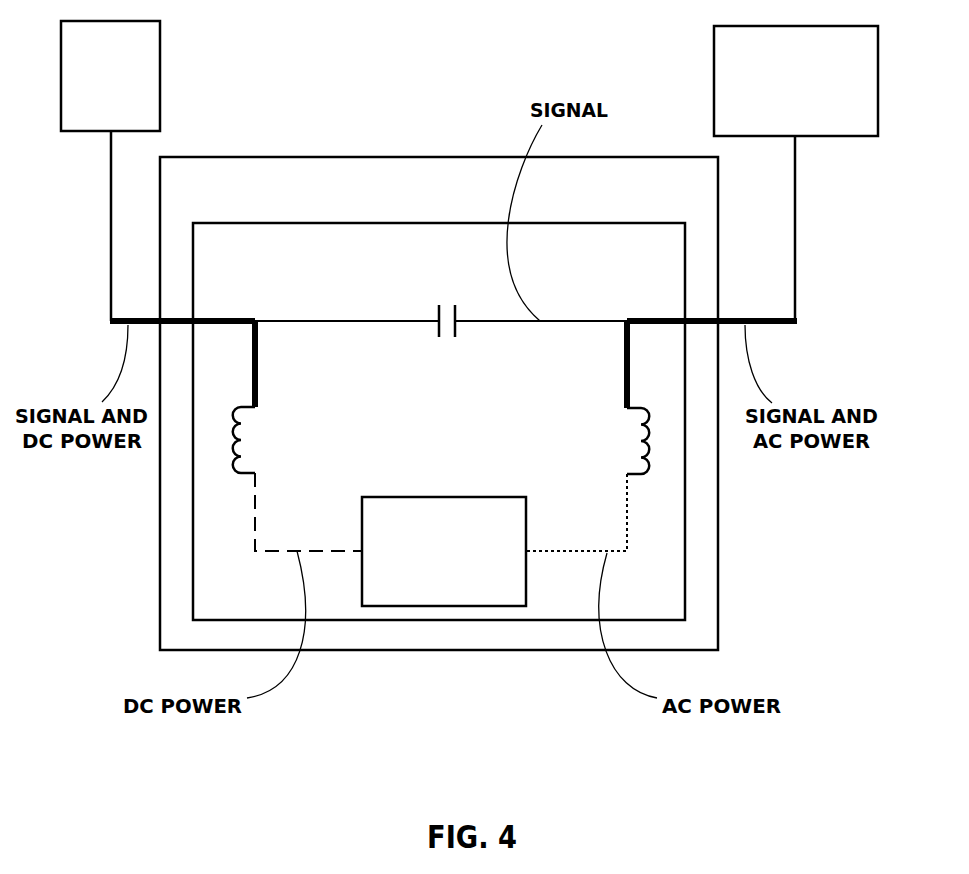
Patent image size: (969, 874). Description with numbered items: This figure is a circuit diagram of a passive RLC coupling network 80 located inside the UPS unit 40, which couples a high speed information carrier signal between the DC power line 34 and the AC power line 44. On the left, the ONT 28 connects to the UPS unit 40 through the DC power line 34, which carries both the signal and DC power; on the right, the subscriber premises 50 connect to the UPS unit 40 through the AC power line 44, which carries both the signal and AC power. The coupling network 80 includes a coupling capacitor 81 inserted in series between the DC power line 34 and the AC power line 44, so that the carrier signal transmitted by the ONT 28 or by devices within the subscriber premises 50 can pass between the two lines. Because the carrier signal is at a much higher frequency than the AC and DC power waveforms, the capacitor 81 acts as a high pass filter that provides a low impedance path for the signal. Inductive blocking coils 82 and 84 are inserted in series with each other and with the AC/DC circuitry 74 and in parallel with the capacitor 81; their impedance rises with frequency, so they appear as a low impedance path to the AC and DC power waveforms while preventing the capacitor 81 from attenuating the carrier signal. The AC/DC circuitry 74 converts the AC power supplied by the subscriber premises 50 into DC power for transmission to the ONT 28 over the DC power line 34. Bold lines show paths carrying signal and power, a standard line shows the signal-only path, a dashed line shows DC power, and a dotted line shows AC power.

The ONT 28 is at (124, 100).
The DC power line 34 is at (108, 240).
The UPS unit 40 is at (690, 157).
The AC power line 44 is at (797, 257).
The subscriber premises 50 is at (809, 116).
The AC/DC circuitry 74 is at (457, 588).
The passive RLC coupling network 80 is at (298, 223).
The coupling capacitor 81 is at (447, 288).
The inductive blocking coil 82 is at (223, 455).
The inductive blocking coil 84 is at (660, 453).